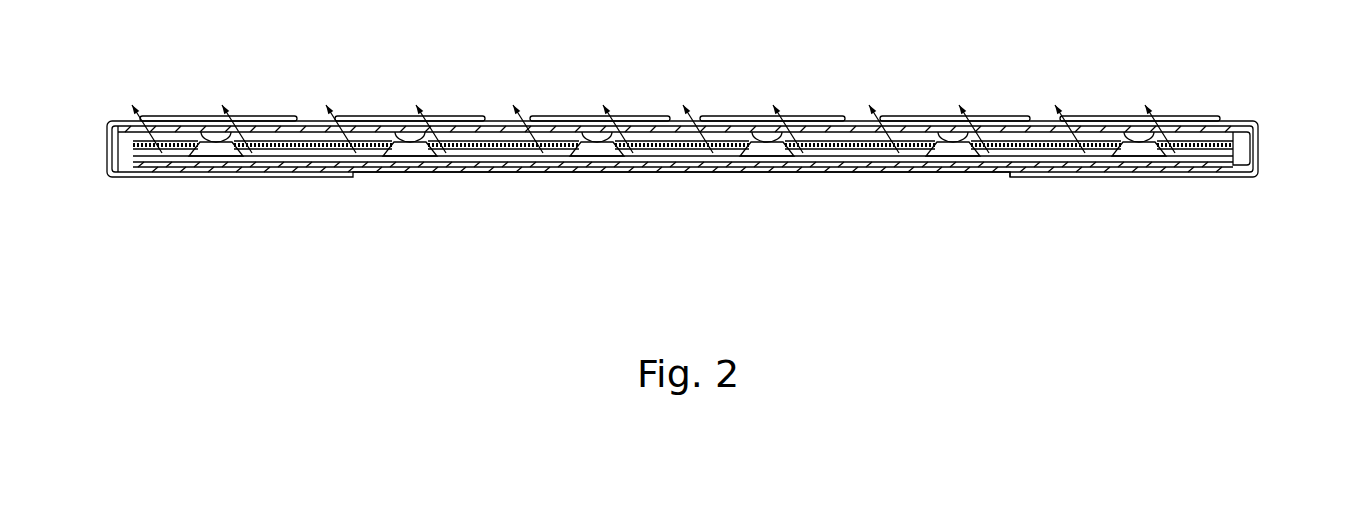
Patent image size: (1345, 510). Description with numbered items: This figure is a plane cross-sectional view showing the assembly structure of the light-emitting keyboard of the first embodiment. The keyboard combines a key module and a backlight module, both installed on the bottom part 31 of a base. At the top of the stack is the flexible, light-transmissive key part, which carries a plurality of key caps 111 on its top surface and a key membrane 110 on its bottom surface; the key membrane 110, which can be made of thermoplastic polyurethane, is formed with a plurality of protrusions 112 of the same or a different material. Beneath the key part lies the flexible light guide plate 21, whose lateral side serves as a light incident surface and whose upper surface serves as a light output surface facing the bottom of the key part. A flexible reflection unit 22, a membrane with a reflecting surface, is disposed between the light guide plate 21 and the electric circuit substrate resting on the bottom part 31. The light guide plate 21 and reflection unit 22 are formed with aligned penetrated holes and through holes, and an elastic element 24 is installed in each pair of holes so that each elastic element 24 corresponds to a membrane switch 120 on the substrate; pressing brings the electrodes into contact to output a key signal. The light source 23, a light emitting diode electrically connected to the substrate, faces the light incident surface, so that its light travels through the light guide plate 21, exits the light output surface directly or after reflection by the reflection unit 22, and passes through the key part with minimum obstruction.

The key membrane 110 is at (1262, 148).
The key caps 111 is at (1180, 121).
The protrusions 112 is at (950, 124).
The membrane switch 120 is at (952, 173).
The light guide plate 21 is at (1125, 140).
The reflection unit 22 is at (1042, 140).
The light source 23 is at (1232, 125).
The elastic element 24 is at (975, 157).
The bottom part 31 is at (1113, 168).